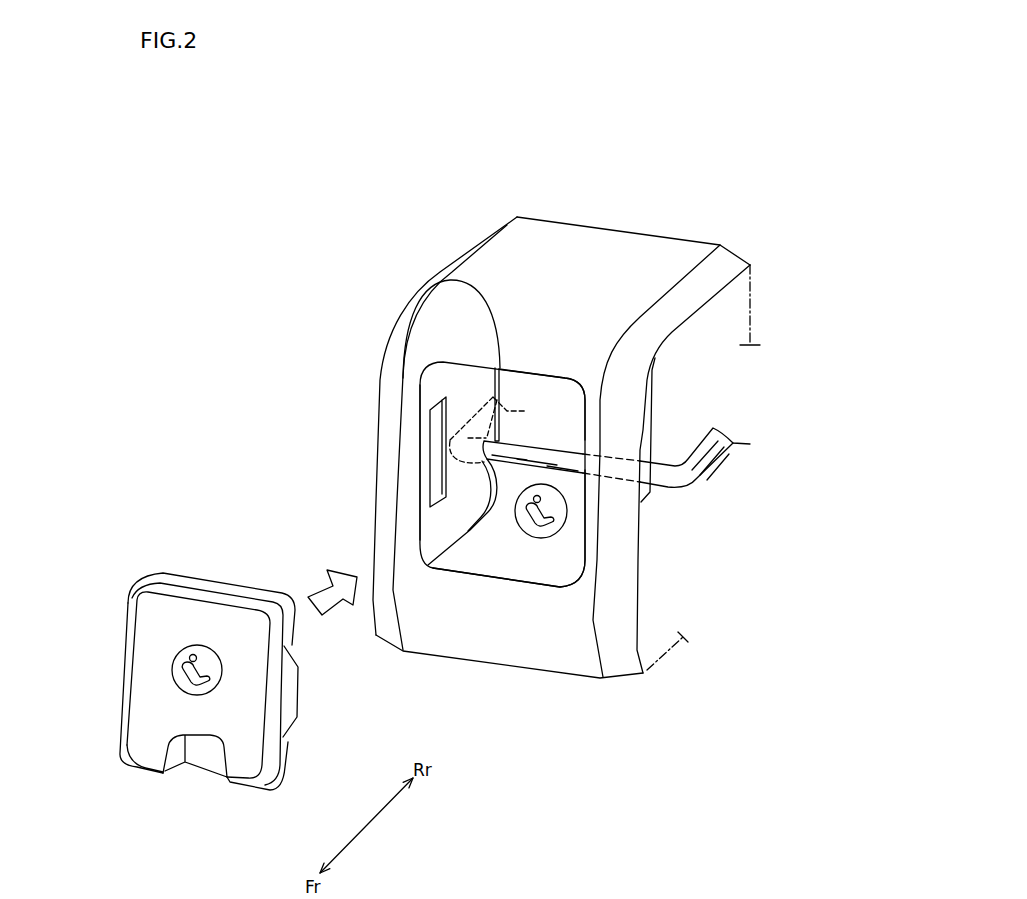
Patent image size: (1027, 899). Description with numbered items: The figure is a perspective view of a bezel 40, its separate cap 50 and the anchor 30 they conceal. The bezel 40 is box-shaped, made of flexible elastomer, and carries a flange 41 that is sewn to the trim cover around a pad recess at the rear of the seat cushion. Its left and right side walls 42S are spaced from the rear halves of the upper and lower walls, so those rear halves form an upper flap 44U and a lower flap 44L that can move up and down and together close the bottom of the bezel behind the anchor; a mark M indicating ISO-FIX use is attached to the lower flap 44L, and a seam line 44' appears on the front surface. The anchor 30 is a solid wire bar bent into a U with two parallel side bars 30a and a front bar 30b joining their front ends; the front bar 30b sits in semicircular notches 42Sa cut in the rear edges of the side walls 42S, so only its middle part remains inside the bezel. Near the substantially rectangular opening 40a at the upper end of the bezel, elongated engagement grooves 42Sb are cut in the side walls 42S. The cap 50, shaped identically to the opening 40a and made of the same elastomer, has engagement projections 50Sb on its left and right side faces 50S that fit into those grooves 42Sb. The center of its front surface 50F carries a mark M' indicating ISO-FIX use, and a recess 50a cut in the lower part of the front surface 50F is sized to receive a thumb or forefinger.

The bezel 40 is at (345, 214).
The flange 41 is at (646, 256).
The front surface seam 44' is at (398, 308).
The notch 42Sa is at (493, 443).
The engagement groove 42Sb is at (440, 467).
The side wall 42S is at (447, 517).
The upper flap 44U is at (560, 420).
The lower flap 44L is at (560, 570).
The mark M is at (592, 534).
The anchor 30 is at (648, 492).
The side bar 30a is at (714, 443).
The front bar 30b is at (585, 518).
The opening 40a is at (483, 567).
The cap 50 is at (143, 568).
The front surface 50F is at (148, 645).
The side face of cap 50S is at (290, 633).
The engagement projection 50Sb is at (295, 696).
The recess 50a is at (193, 773).
The mark M' is at (136, 698).